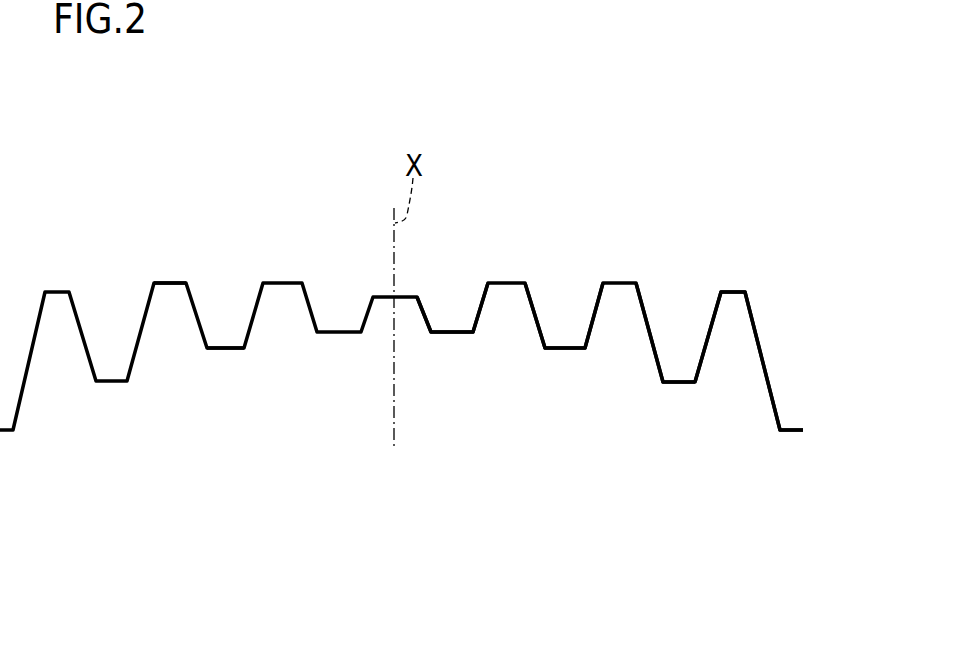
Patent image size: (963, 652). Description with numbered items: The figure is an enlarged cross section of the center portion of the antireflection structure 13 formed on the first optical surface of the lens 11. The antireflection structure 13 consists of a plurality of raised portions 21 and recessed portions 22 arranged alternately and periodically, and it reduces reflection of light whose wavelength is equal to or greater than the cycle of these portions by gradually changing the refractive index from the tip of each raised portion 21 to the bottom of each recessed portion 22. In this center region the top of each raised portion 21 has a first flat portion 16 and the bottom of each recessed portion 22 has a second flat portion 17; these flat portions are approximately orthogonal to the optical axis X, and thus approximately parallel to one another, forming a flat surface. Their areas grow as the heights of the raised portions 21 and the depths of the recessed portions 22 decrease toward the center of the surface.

The lens 11 is at (706, 124).
The antireflection structure 13 is at (783, 300).
The first flat portion 16 is at (172, 282).
The second flat portion 17 is at (218, 347).
The raised portion 21 is at (481, 302).
The recessed portion 22 is at (678, 380).